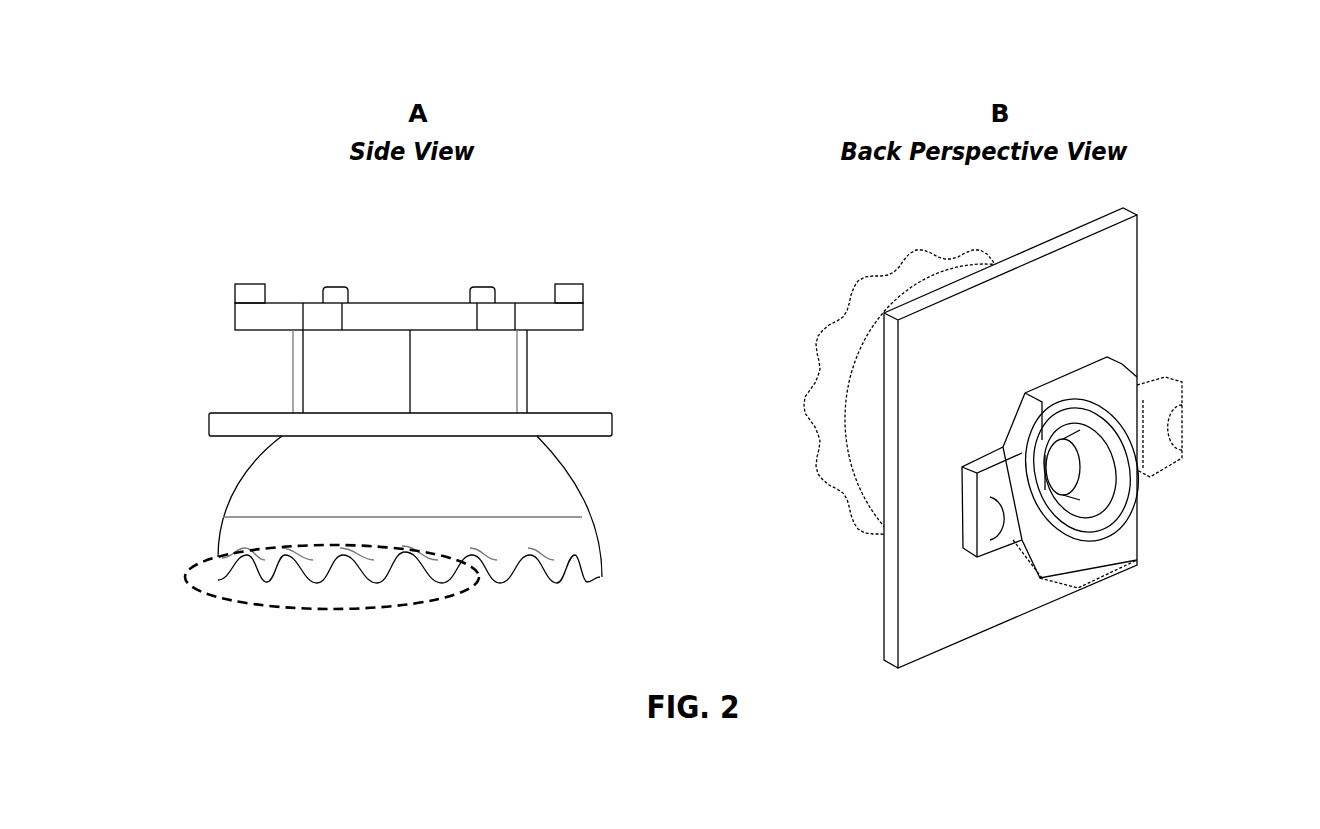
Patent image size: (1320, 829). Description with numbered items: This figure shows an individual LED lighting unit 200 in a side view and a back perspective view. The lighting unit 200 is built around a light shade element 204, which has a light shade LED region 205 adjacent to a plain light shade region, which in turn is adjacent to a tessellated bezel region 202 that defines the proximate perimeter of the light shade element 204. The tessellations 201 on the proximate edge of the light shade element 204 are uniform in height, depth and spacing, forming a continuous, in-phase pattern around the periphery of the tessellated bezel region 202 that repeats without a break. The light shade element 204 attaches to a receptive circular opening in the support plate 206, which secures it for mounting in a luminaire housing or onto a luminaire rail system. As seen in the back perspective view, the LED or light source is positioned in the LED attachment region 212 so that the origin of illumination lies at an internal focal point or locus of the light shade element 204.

The lighting unit 200 is at (230, 202).
The tessellations 201 is at (336, 612).
The tessellated bezel region 202 is at (840, 506).
The light shade element 204 is at (860, 443).
The light shade LED region 205 is at (975, 416).
The support plate 206 is at (585, 425).
The LED attachment region 212 is at (1069, 464).